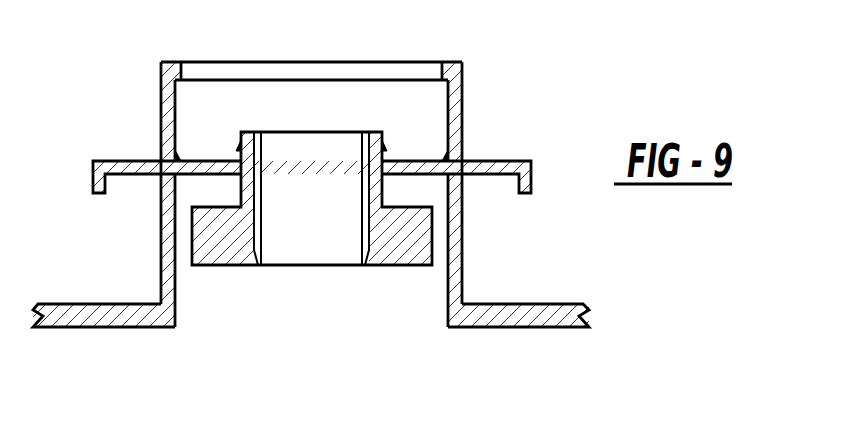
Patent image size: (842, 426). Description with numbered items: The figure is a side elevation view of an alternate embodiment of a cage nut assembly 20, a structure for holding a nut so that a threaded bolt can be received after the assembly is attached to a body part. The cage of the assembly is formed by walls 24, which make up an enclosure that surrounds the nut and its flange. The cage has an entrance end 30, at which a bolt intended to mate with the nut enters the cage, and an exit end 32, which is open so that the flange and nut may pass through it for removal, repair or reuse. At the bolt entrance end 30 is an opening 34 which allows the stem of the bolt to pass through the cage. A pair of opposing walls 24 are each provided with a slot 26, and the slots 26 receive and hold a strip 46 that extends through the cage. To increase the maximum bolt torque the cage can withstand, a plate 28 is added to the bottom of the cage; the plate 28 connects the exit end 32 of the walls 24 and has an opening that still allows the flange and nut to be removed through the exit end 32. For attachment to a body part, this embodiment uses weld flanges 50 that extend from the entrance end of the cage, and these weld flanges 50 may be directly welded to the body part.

The cage nut assembly 20 is at (561, 73).
The walls 24 is at (161, 92).
The slots 26 is at (168, 150).
The plate 28 is at (441, 72).
The entrance end 30 is at (232, 297).
The exit end 32 is at (257, 103).
The opening 34 is at (323, 210).
The strip 46 is at (135, 177).
The weld flanges 50 is at (110, 303).